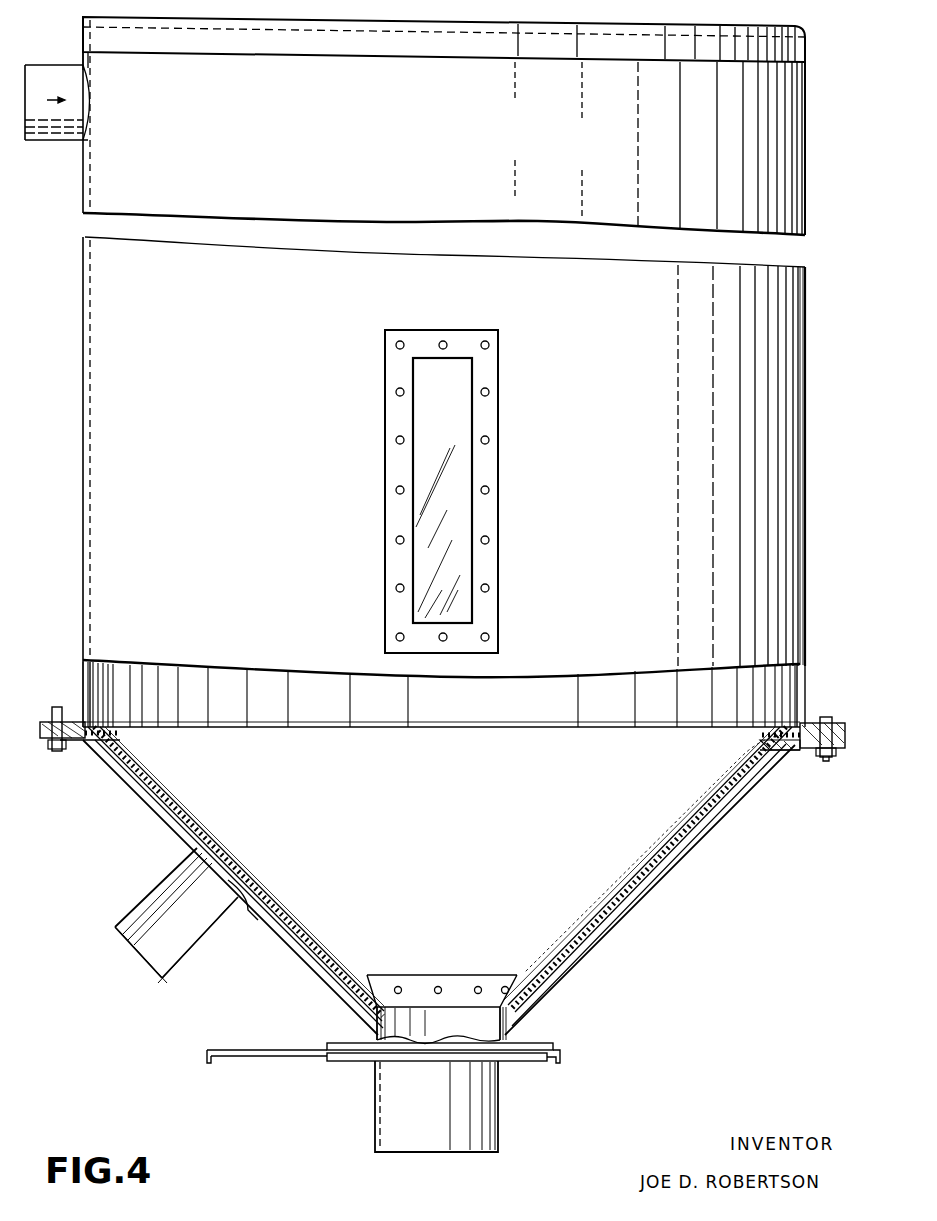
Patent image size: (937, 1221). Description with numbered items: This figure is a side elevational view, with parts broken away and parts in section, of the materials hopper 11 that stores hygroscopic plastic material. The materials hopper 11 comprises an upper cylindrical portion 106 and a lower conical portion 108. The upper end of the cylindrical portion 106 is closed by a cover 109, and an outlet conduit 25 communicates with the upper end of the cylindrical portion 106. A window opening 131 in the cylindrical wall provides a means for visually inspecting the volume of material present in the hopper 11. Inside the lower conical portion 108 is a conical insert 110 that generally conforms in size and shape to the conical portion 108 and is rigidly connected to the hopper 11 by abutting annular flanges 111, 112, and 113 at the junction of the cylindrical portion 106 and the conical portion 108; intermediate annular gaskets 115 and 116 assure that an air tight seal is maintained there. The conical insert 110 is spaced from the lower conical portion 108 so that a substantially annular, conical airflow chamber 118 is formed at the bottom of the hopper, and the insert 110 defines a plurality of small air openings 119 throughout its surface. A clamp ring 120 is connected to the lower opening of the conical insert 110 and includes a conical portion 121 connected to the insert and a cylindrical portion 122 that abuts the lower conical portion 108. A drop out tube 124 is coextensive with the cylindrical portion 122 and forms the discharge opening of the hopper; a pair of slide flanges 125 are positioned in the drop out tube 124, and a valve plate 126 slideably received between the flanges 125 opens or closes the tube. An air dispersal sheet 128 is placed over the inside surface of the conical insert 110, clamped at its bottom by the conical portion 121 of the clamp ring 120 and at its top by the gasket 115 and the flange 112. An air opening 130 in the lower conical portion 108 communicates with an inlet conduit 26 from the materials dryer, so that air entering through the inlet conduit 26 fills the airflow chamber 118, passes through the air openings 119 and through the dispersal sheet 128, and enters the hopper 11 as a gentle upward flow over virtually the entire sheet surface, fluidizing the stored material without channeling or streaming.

The materials hopper 11 is at (83, 244).
The outlet conduit 25 is at (55, 72).
The inlet conduit 26 is at (116, 920).
The upper cylindrical portion 106 is at (82, 497).
The lower conical portion 108 is at (610, 940).
The cover 109 is at (398, 33).
The conical insert 110 is at (262, 876).
The annular flange 111 is at (840, 730).
The annular flange 112 is at (838, 740).
The annular flange 113 is at (805, 755).
The annular gasket 115 is at (42, 722).
The annular gasket 116 is at (44, 741).
The annular conical airflow chamber 118 is at (143, 782).
The air openings 119 is at (200, 837).
The clamp ring 120 is at (413, 976).
The conical portion 121 is at (462, 978).
The cylindrical portion 122 is at (518, 1030).
The drop out tube 124 is at (498, 1136).
The slide flanges 125 is at (336, 1043).
The valve plate 126 is at (203, 1052).
The air dispersal sheet 128 is at (736, 782).
The air opening 130 is at (244, 905).
The window opening 131 is at (422, 382).